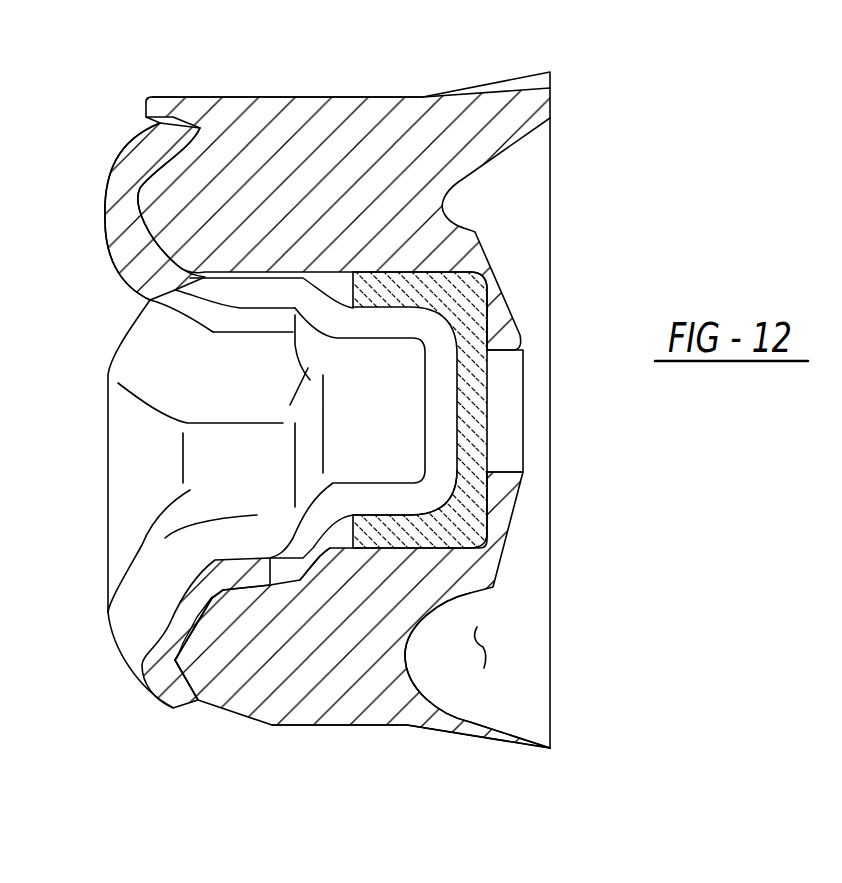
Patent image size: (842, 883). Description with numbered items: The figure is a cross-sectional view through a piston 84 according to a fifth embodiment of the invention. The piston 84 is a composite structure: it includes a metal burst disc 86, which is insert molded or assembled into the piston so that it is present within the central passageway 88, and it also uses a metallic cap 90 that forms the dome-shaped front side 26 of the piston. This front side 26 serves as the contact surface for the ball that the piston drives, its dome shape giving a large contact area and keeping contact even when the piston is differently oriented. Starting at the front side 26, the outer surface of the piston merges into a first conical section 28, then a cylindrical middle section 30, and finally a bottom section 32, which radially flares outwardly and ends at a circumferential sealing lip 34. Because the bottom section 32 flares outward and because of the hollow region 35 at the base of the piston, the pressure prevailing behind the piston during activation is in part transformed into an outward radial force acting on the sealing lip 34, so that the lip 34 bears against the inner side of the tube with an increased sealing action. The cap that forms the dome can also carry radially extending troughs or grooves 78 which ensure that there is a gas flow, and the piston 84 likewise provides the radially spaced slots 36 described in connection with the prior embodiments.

The dome-shaped front side 26 is at (150, 305).
The first conical section 28 is at (243, 718).
The cylindrical middle section 30 is at (362, 725).
The bottom section 32 is at (465, 737).
The circumferential sealing lip 34 is at (550, 750).
The hollow region 35 is at (485, 647).
The radially spaced slots 36 is at (522, 72).
The radially extending troughs or grooves 78 is at (175, 372).
The piston 84 is at (353, 97).
The metal burst disc 86 is at (487, 423).
The central passageway 88 is at (485, 515).
The metallic cap 90 is at (170, 610).